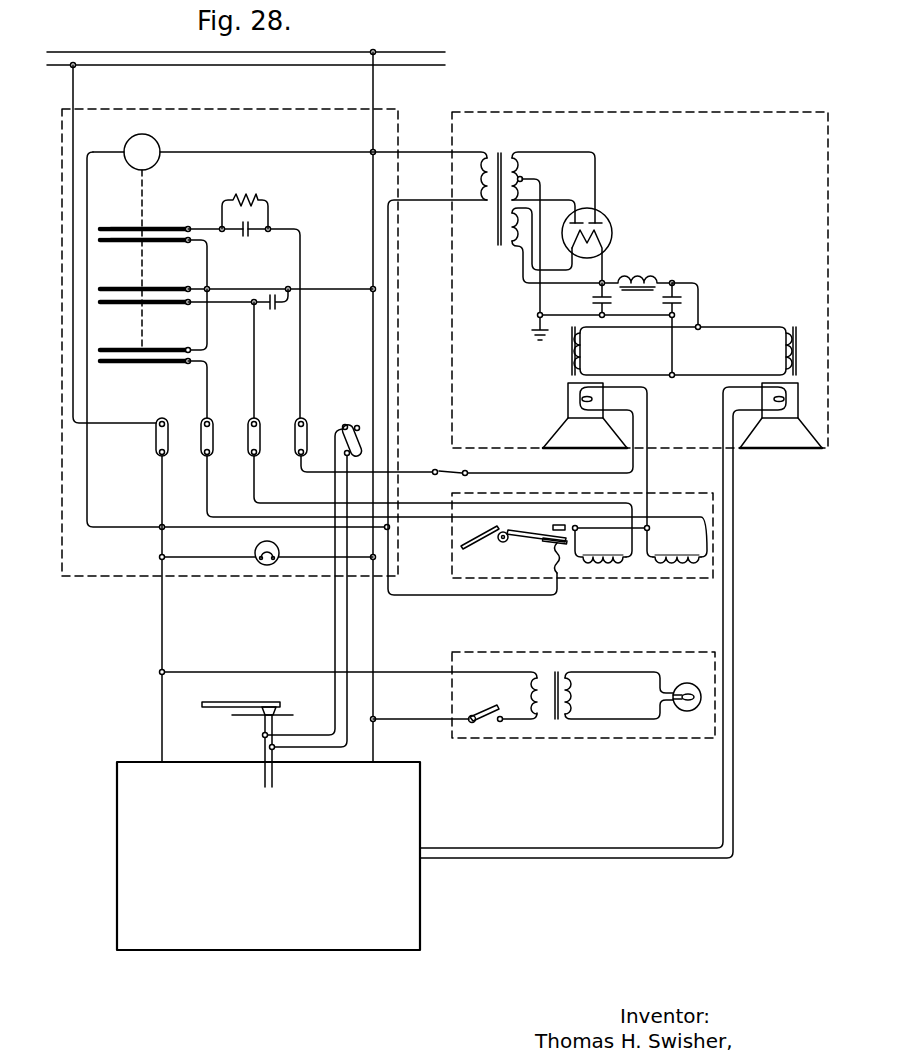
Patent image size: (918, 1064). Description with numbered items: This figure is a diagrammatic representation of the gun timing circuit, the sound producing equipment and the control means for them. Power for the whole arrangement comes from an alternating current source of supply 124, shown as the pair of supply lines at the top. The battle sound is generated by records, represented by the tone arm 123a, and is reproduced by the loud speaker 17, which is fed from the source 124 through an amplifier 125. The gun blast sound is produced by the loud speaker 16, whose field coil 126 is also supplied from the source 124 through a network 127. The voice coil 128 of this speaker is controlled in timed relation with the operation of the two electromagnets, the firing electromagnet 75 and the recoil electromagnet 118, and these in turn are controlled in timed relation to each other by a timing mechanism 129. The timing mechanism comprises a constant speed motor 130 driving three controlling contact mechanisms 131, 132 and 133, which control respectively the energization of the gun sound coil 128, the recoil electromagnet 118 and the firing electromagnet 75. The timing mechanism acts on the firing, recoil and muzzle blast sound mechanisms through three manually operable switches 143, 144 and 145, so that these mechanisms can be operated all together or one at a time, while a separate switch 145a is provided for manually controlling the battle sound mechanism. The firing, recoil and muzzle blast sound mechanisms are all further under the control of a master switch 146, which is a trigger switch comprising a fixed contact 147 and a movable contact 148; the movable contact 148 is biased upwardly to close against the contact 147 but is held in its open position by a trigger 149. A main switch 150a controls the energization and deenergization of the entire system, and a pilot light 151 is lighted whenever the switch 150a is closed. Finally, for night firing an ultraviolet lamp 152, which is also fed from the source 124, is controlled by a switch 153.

The alternating current source of supply 124 is at (425, 65).
The constant speed motor 130 is at (155, 146).
The timing mechanism 129 is at (152, 200).
The controlling contact mechanism 131 is at (106, 225).
The controlling contact mechanism 132 is at (109, 287).
The controlling contact mechanism 133 is at (108, 347).
The network 127 is at (607, 198).
The field coil 126 is at (592, 362).
The loud speaker 16 is at (574, 412).
The loud speaker 17 is at (807, 394).
The voice coil 128 is at (580, 402).
The manually operable switch 145 is at (297, 442).
The separate switch 145a is at (358, 433).
The main switch 150a is at (158, 443).
The manually operable switch 143 is at (213, 443).
The manually operable switch 144 is at (262, 443).
The master switch 146 is at (520, 528).
The movable contact 148 is at (551, 532).
The fixed contact 147 is at (558, 522).
The trigger 149 is at (485, 545).
The pilot light 151 is at (280, 550).
The recoil electromagnet 118 is at (603, 567).
The firing electromagnet 75 is at (678, 567).
The tone arm 123a is at (243, 700).
The switch 153 is at (483, 707).
The ultraviolet lamp 152 is at (687, 681).
The amplifier 125 is at (420, 900).